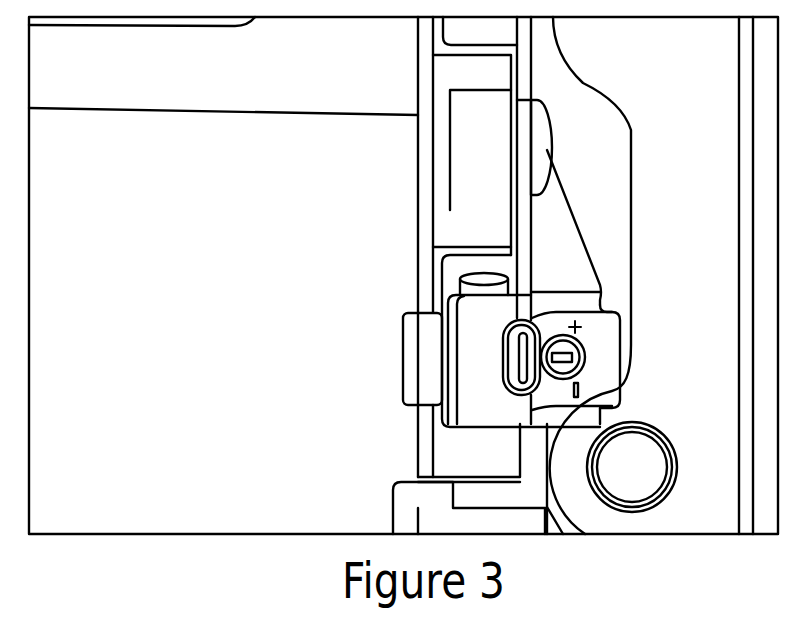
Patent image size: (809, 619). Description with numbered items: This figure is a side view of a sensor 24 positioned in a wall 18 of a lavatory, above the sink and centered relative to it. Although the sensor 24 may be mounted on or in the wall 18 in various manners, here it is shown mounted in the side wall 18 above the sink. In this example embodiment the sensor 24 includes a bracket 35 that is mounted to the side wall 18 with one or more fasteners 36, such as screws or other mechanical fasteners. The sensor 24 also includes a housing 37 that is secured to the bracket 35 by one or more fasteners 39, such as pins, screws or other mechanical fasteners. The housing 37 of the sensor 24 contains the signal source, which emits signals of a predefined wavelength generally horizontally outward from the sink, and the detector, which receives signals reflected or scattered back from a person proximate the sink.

The wall 18 is at (428, 50).
The sensor 24 is at (610, 243).
The bracket 35 is at (563, 233).
The fasteners 36 is at (545, 147).
The housing 37 is at (590, 372).
The fasteners 39 is at (477, 288).